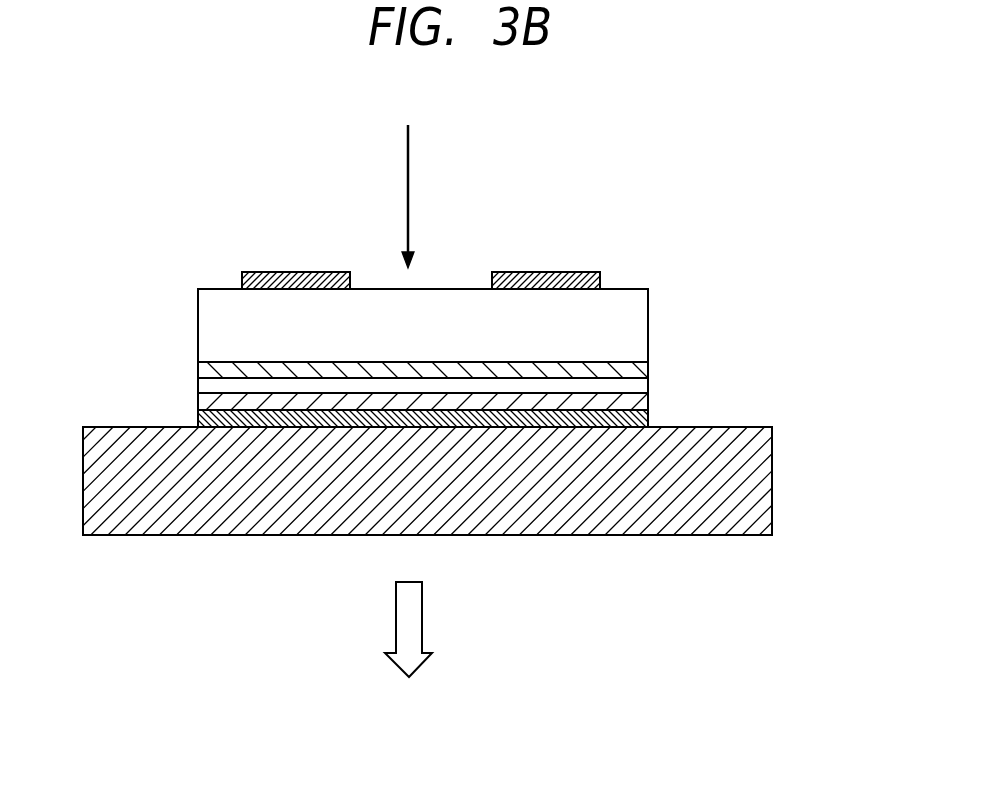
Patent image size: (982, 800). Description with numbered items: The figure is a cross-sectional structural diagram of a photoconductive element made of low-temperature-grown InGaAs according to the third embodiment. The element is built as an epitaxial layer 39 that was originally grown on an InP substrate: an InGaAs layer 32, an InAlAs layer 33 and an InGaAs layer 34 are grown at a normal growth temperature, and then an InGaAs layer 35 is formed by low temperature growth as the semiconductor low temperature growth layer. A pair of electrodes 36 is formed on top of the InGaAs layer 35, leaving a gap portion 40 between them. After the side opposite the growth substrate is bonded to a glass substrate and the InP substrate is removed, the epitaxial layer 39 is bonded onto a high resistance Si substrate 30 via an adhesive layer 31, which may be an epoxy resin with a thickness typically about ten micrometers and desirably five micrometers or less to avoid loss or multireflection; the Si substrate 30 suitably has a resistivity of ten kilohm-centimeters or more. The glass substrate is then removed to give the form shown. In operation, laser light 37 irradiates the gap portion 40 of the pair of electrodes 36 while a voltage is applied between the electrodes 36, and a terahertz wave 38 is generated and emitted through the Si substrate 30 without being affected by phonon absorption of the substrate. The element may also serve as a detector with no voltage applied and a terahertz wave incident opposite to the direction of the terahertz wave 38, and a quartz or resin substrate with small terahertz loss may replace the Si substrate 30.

The Si substrate 30 is at (765, 484).
The adhesive layer 31 is at (650, 418).
The InGaAs layer 32 is at (638, 402).
The InAlAs layer 33 is at (210, 385).
The InGaAs layer 34 is at (213, 370).
The InGaAs layer 35 is at (213, 315).
The pair of electrodes 36 is at (558, 272).
The laser light 37 is at (409, 153).
The terahertz wave 38 is at (423, 620).
The epitaxial layer 39 is at (660, 288).
The gap portion 40 is at (447, 275).